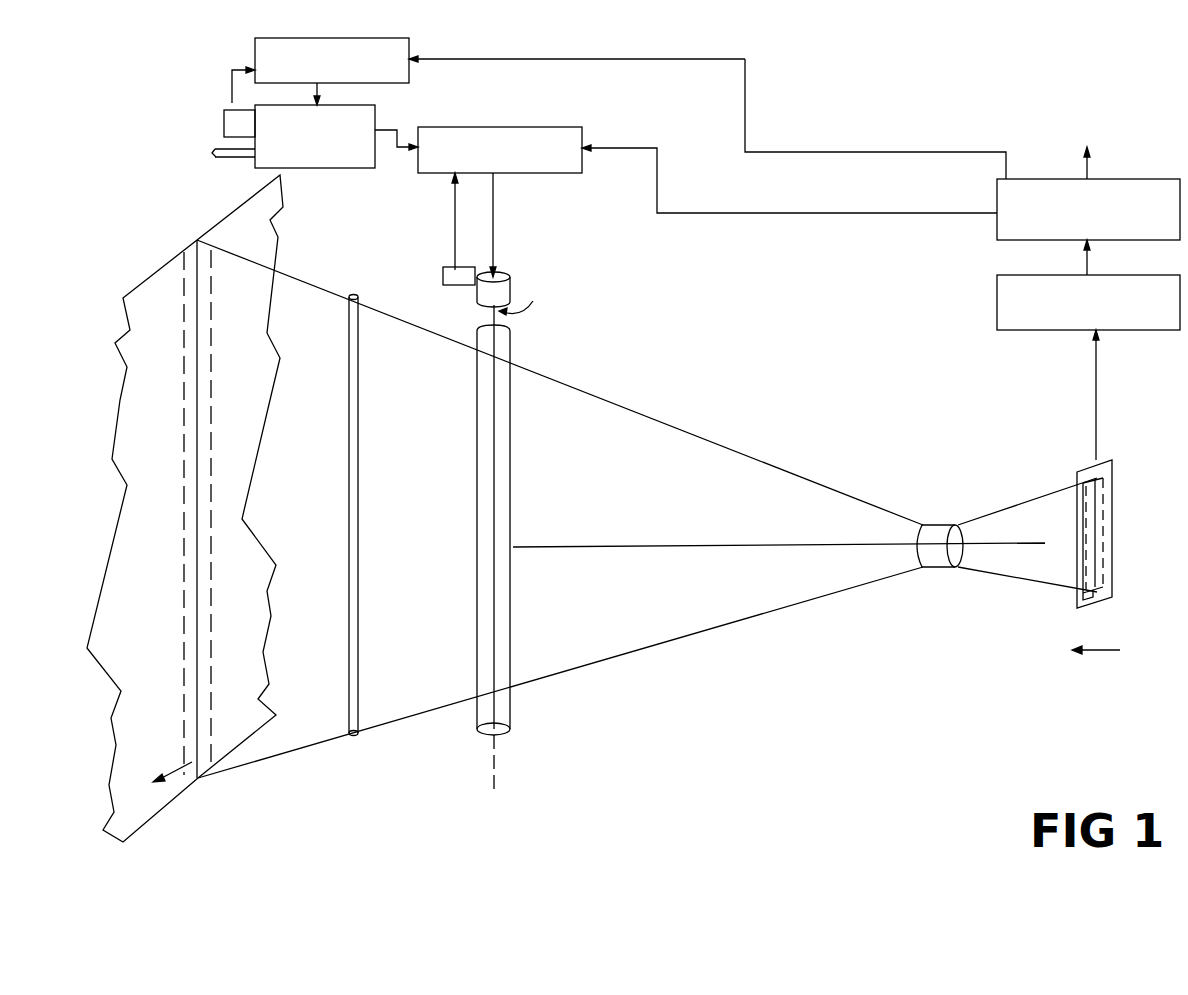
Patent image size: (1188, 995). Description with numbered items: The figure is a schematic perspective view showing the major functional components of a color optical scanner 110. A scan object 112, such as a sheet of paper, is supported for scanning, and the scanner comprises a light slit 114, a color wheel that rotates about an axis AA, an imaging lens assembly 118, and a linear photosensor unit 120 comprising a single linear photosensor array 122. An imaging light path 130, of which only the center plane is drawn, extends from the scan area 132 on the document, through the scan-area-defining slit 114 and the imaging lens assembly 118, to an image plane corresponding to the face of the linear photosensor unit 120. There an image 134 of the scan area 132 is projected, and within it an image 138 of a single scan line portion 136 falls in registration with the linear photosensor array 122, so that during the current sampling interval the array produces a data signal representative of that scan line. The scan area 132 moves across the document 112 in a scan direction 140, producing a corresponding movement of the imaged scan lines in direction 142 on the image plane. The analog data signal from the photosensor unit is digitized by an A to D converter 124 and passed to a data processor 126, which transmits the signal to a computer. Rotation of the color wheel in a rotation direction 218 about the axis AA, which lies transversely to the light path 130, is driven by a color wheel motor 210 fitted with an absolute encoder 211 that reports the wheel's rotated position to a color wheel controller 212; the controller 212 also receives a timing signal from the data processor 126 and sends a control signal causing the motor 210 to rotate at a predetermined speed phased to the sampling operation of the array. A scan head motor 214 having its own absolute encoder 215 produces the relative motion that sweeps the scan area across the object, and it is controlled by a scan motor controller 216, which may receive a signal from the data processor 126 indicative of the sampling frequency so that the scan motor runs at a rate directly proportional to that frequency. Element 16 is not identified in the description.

The rotating wheel 16 is at (512, 345).
The color optical scanner 110 is at (713, 213).
The scan object 112 is at (149, 287).
The light slit 114 is at (354, 297).
The imaging lens assembly 118 is at (942, 524).
The linear photosensor unit 120 is at (1121, 461).
The linear photosensor array 122 is at (1102, 585).
The A to D converter 124 is at (1075, 323).
The data processor 126 is at (1075, 233).
The imaging light path 130 is at (748, 452).
The scan area 132 is at (190, 262).
The image of the scan area 134 is at (1107, 520).
The scan line portion 136 is at (197, 340).
The image of scan line 138 is at (1095, 550).
The scan direction 140 is at (174, 771).
The direction of imaged scan line movement 142 is at (1097, 652).
The color wheel motor 210 is at (512, 291).
The absolute encoder 211 is at (441, 283).
The color wheel controller 212 is at (522, 127).
The scan head motor 214 is at (336, 170).
The absolute encoder 215 is at (224, 120).
The scan motor controller 216 is at (255, 61).
The rotation direction 218 is at (535, 299).
The axis AA is at (495, 792).